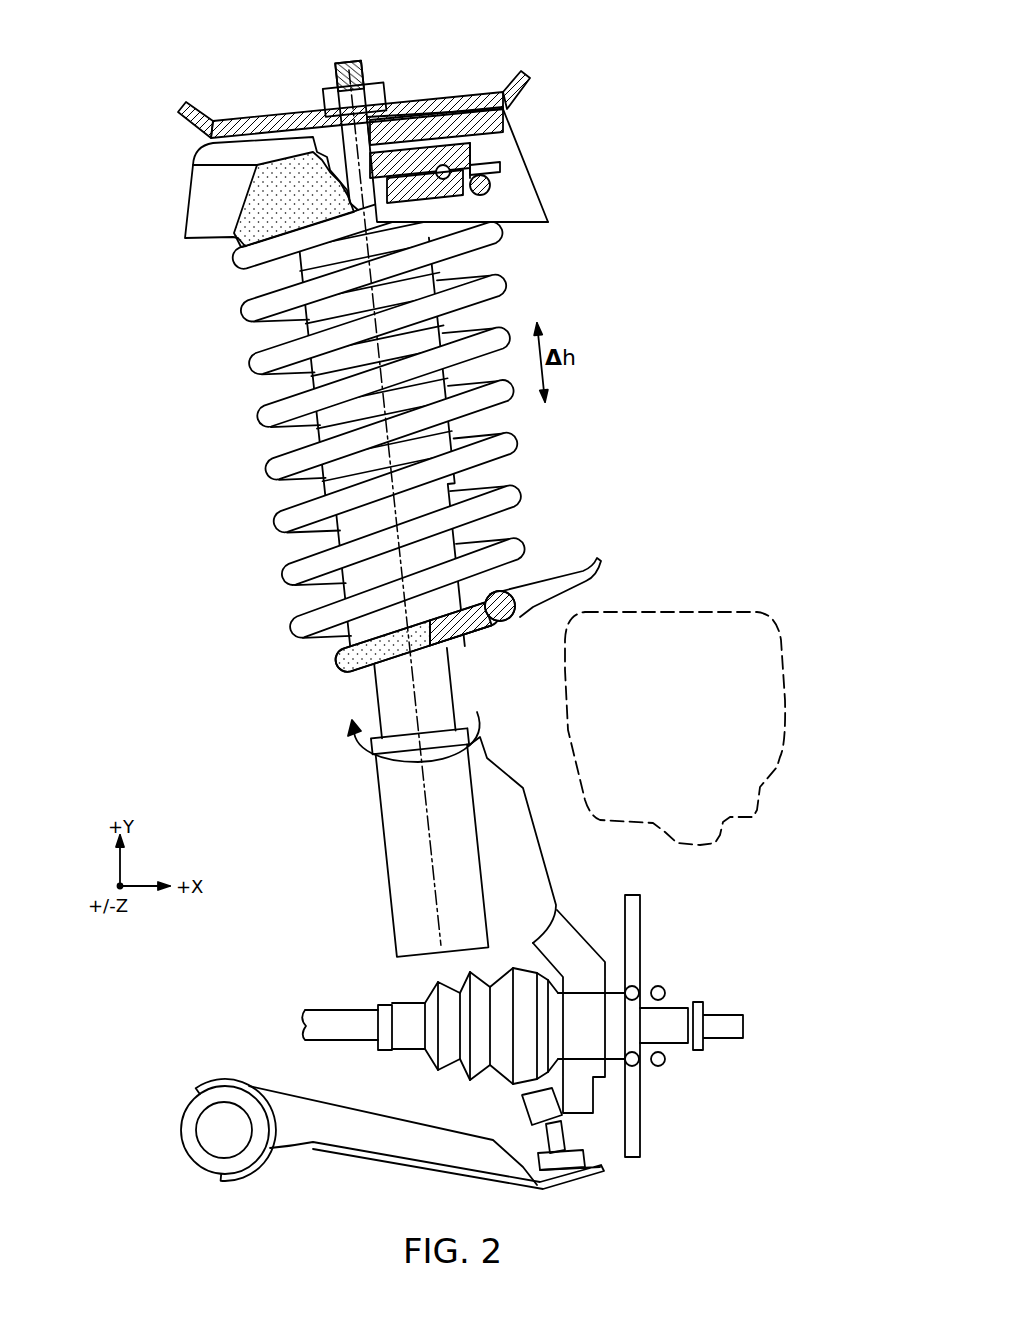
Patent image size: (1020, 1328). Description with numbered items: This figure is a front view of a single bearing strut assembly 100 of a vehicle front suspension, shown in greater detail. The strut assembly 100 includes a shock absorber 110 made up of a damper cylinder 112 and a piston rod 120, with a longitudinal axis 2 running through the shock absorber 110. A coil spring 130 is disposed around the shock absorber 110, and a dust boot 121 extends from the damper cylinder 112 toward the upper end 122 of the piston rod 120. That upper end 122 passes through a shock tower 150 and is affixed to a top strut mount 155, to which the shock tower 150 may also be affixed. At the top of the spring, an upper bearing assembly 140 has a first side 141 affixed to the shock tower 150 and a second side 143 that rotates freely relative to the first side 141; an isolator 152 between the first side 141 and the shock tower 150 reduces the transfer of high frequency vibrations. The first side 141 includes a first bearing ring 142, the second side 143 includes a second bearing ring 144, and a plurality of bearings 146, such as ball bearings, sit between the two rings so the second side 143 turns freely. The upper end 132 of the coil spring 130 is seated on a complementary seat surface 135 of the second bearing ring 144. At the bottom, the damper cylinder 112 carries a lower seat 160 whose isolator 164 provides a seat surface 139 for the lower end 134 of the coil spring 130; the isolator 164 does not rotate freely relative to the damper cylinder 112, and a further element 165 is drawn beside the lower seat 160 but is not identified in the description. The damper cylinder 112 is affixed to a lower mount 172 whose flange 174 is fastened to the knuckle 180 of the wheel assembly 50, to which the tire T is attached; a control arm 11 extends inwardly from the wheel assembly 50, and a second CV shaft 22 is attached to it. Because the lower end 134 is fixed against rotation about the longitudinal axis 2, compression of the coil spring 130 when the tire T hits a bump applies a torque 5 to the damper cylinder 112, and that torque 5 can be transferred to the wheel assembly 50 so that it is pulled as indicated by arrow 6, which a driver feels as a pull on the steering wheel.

The strut assembly 100 is at (648, 205).
The shock absorber 110 is at (328, 543).
The damper cylinder 112 is at (446, 492).
The piston rod 120 is at (342, 106).
The dust boot 121 is at (437, 320).
The upper end 122 is at (357, 65).
The coil spring 130 is at (258, 414).
The upper end 132 is at (490, 185).
The lower end 134 is at (503, 592).
The seat surface 135 is at (470, 200).
The seat surface 139 is at (488, 625).
The upper bearing assembly 140 is at (480, 163).
The first side 141 is at (517, 137).
The first bearing ring 142 is at (415, 142).
The second side 143 is at (517, 180).
The second bearing ring 144 is at (428, 190).
The bearings 146 is at (445, 165).
The shock tower 150 is at (168, 186).
The isolator 152 is at (506, 116).
The top strut mount 155 is at (193, 109).
The lower seat 160 is at (333, 677).
The isolator 164 is at (460, 627).
The seat bracket 165 is at (593, 568).
The lower mount 172 is at (393, 852).
The flange 174 is at (528, 840).
The knuckle 180 is at (578, 940).
The wheel assembly 50 is at (647, 943).
The second CV shaft 22 is at (315, 1010).
The longitudinal axis 2 is at (428, 810).
The torque 5 is at (485, 716).
The arrow 6 is at (645, 1199).
The control arm 11 is at (362, 1153).
The tire T is at (786, 667).